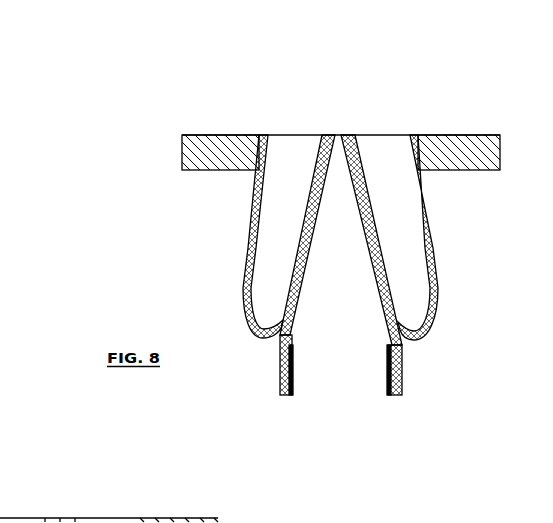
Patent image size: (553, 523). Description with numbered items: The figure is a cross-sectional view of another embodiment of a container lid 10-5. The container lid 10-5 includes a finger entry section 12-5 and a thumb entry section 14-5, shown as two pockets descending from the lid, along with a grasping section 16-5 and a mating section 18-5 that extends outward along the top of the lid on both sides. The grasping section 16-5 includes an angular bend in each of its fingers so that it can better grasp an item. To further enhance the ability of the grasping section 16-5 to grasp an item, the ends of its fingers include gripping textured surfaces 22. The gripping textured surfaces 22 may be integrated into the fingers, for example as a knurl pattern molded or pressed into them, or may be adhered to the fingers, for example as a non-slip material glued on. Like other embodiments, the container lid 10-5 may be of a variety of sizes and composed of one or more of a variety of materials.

The container lid 10-5 is at (200, 405).
The finger entry section 12-5 is at (533, 85).
The thumb entry section 14-5 is at (248, 85).
The grasping section 16-5 is at (503, 480).
The mating section 18-5 is at (537, 233).
The gripping textured surfaces 22 is at (345, 480).